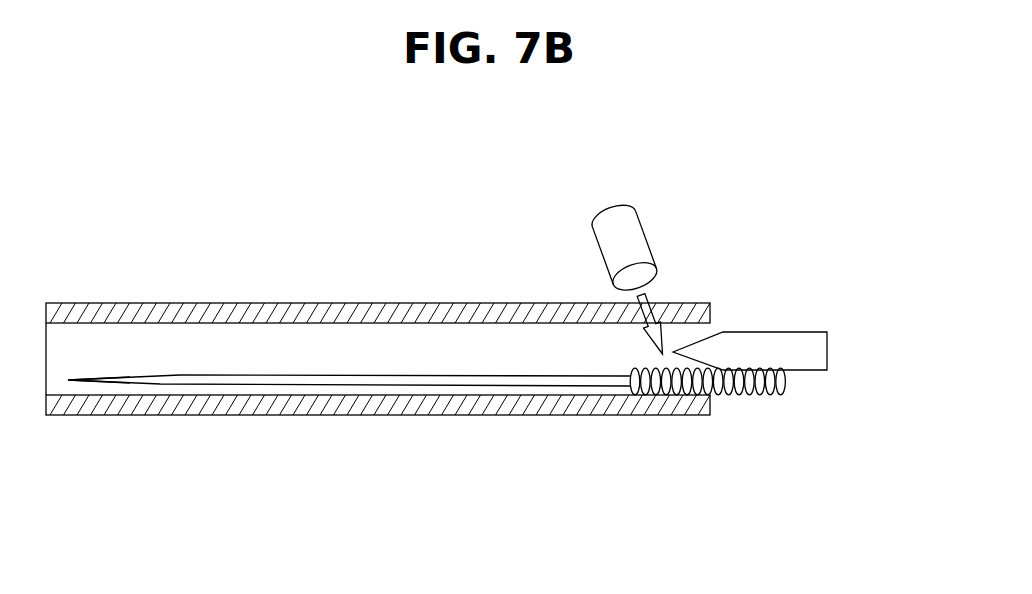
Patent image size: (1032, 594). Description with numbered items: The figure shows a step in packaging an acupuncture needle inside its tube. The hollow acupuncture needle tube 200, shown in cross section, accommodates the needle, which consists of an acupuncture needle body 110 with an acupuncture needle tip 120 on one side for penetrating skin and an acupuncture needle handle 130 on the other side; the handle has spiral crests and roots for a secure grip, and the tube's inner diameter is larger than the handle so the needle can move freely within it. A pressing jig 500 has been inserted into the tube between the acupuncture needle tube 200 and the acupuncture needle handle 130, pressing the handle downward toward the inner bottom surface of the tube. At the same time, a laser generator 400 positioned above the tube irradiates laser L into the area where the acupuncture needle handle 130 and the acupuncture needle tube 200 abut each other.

The acupuncture needle tube 200 is at (464, 303).
The acupuncture needle body 110 is at (531, 383).
The acupuncture needle tip 120 is at (150, 381).
The acupuncture needle handle 130 is at (669, 393).
The pressing jig 500 is at (774, 342).
The laser generator 400 is at (637, 239).
The laser L is at (664, 352).